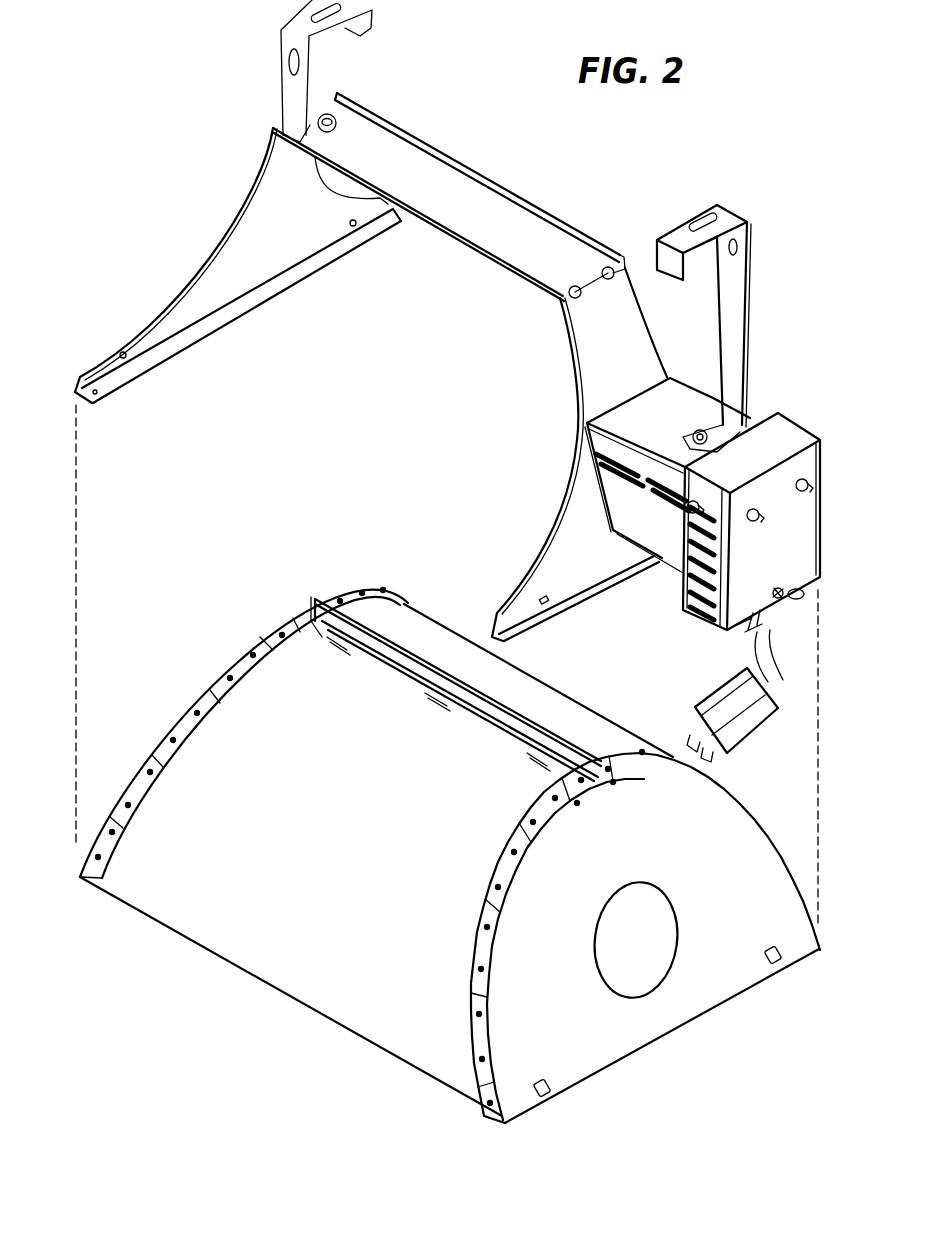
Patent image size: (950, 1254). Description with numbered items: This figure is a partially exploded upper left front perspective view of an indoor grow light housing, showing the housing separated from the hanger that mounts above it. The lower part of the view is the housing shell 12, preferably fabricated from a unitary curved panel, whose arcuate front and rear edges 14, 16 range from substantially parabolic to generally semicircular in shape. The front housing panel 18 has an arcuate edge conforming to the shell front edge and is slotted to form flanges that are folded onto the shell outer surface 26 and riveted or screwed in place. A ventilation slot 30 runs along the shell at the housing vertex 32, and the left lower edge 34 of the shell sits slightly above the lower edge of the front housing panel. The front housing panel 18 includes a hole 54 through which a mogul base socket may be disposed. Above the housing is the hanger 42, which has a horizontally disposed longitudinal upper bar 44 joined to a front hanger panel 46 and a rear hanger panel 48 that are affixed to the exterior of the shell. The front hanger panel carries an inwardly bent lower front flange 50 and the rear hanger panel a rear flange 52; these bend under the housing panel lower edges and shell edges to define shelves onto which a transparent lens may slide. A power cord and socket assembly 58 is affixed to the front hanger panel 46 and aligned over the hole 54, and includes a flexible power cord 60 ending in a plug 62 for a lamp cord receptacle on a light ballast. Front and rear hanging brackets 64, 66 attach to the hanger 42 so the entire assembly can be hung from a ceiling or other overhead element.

The housing shell 12 is at (273, 878).
The arcuate front edge 14 is at (633, 748).
The arcuate rear edge 16 is at (257, 638).
The front housing panel 18 is at (740, 830).
The shell outer surface 26 is at (375, 781).
The ventilation slot 30 is at (333, 612).
The housing vertex 32 is at (295, 610).
The left lower edge 34 is at (643, 1047).
The hanger 42 is at (637, 150).
The longitudinal upper bar 44 is at (453, 203).
The front hanger panel 46 is at (603, 373).
The rear hanger panel 48 is at (297, 242).
The lower front flange 50 is at (493, 635).
The rear flange 52 is at (220, 317).
The hole 54 is at (650, 934).
The power cord and socket assembly 58 is at (747, 558).
The flexible power cord 60 is at (765, 648).
The plug 62 is at (723, 690).
The front hanging bracket 64 is at (752, 282).
The rear hanging bracket 66 is at (281, 40).